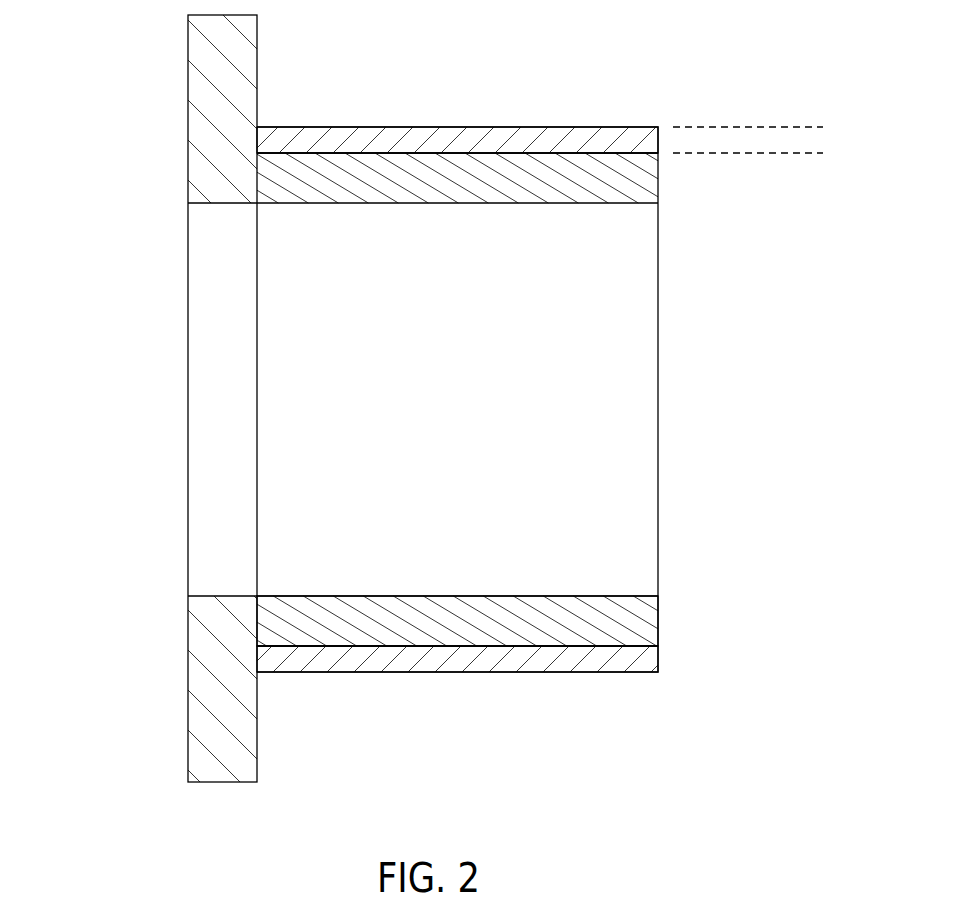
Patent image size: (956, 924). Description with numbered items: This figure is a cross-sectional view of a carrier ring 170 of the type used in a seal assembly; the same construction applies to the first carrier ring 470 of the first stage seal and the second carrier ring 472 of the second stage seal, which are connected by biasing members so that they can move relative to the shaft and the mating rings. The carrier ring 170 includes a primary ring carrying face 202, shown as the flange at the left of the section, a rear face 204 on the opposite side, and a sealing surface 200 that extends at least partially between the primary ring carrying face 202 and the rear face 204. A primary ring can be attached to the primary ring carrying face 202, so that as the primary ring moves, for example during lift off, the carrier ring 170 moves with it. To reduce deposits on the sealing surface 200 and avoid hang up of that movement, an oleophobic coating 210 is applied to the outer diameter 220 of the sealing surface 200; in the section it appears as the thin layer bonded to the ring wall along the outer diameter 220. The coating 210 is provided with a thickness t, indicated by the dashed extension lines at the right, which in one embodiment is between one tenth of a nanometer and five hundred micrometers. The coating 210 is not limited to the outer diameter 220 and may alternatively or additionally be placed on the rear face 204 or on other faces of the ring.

The carrier ring 170 is at (398, 398).
The first carrier ring 470 is at (398, 398).
The second carrier ring 472 is at (398, 398).
The sealing surface 200 is at (484, 399).
The primary ring carrying face 202 is at (188, 110).
The rear face 204 is at (658, 618).
The oleophobic coating 210 is at (421, 127).
The outer diameter 220 is at (573, 154).
The thickness t is at (813, 152).